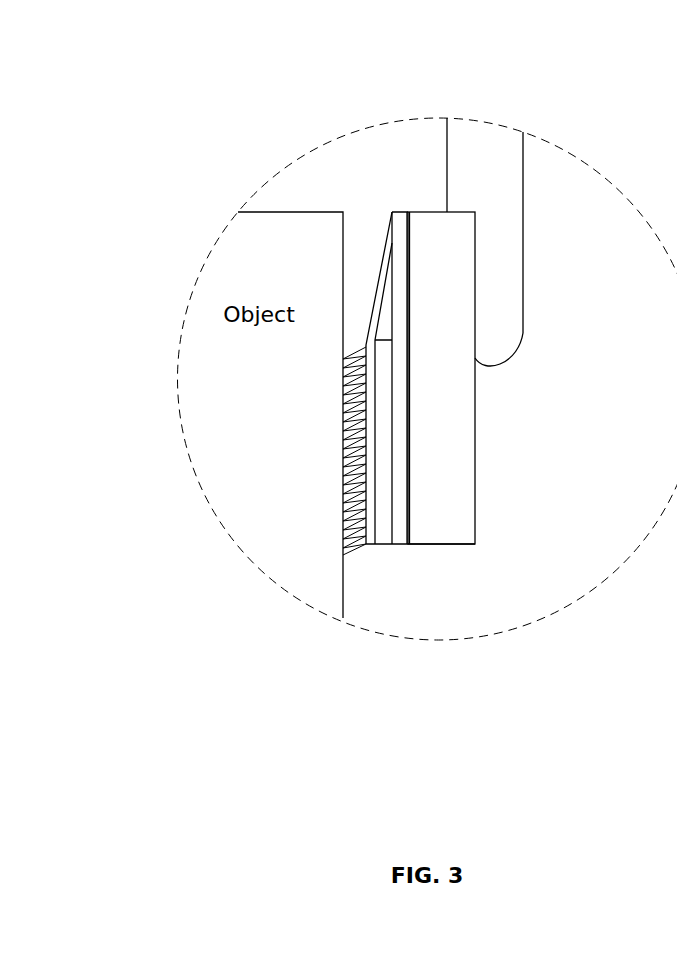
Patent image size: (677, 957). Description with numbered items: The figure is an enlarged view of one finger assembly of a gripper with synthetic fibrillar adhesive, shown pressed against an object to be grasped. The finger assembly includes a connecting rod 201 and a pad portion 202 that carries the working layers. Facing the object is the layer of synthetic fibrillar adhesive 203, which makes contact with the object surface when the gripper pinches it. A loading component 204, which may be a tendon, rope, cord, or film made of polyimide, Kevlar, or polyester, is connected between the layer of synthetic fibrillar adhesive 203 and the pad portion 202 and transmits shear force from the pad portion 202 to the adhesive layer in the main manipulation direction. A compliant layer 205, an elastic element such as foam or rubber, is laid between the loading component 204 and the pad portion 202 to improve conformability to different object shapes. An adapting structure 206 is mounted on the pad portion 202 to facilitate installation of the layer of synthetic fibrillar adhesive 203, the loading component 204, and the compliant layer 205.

The connecting rod 201 is at (485, 148).
The pad portion 202 is at (442, 545).
The layer of synthetic fibrillar adhesive 203 is at (352, 550).
The loading component 204 is at (377, 283).
The compliant layer 205 is at (382, 545).
The adapting structure 206 is at (400, 545).